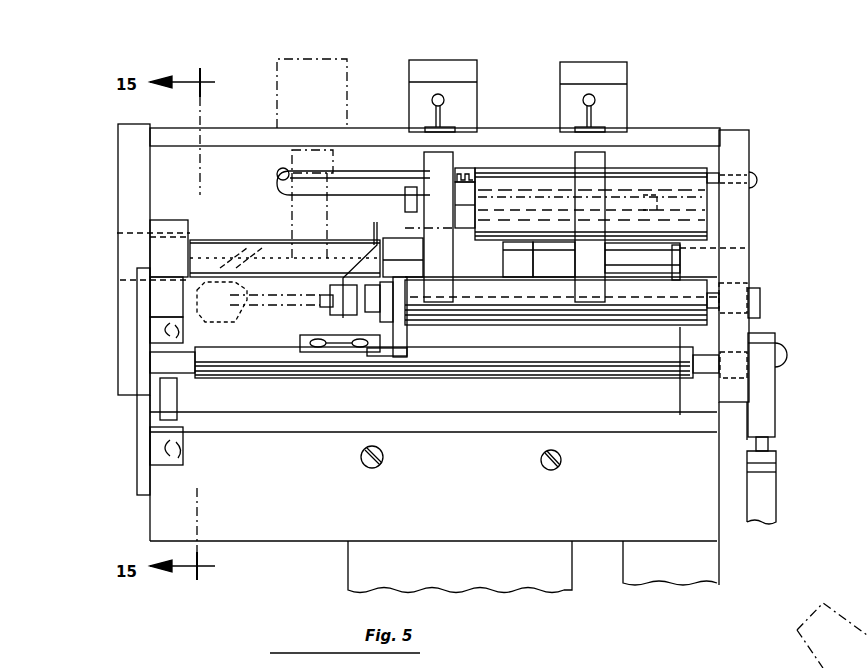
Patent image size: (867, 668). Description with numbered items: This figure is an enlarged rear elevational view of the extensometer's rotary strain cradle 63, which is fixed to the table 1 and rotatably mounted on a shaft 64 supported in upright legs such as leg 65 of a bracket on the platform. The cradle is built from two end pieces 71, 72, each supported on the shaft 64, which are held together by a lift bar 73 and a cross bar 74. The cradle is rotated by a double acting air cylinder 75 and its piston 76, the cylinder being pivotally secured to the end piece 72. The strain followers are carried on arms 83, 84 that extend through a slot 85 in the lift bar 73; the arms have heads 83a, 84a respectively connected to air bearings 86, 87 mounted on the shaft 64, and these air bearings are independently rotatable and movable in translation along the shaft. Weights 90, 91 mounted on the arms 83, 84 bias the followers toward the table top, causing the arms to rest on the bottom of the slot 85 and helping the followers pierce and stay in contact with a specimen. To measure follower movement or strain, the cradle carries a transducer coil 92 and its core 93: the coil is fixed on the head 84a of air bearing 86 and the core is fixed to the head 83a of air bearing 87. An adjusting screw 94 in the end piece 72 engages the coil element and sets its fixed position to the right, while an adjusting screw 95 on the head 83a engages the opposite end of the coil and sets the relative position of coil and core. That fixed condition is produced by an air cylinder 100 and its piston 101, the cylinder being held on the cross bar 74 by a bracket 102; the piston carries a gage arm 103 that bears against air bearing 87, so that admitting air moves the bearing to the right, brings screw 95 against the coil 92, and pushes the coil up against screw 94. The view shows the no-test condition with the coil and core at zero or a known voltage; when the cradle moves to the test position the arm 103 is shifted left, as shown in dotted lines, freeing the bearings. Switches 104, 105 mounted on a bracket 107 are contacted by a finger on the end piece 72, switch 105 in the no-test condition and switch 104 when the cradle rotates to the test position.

The table 1 is at (370, 565).
The rotary strain cradle 63 is at (478, 502).
The shaft 64 is at (128, 235).
The upright leg 65 is at (167, 222).
The end piece 71 is at (132, 145).
The end piece 72 is at (740, 148).
The lift bar 73 is at (248, 138).
The cross bar 74 is at (272, 368).
The double acting air cylinder 75 is at (765, 500).
The piston 76 is at (760, 445).
The arm 83 is at (603, 130).
The head 83a is at (603, 162).
The arm 84 is at (433, 128).
The head 84a is at (433, 162).
The slot 85 is at (282, 168).
The air bearing 86 is at (570, 266).
The air bearing 87 is at (412, 263).
The weight 90 is at (625, 73).
The weight 91 is at (347, 93).
The transducer coil 92 is at (550, 180).
The core 93 is at (470, 197).
The adjusting screw 94 is at (757, 177).
The adjusting screw 95 is at (460, 168).
The air cylinder 100 is at (518, 305).
The piston 101 is at (358, 312).
The bracket 102 is at (337, 357).
The gage arm 103 is at (218, 253).
The switch 104 is at (160, 302).
The switch 105 is at (158, 442).
The bracket 107 is at (140, 475).